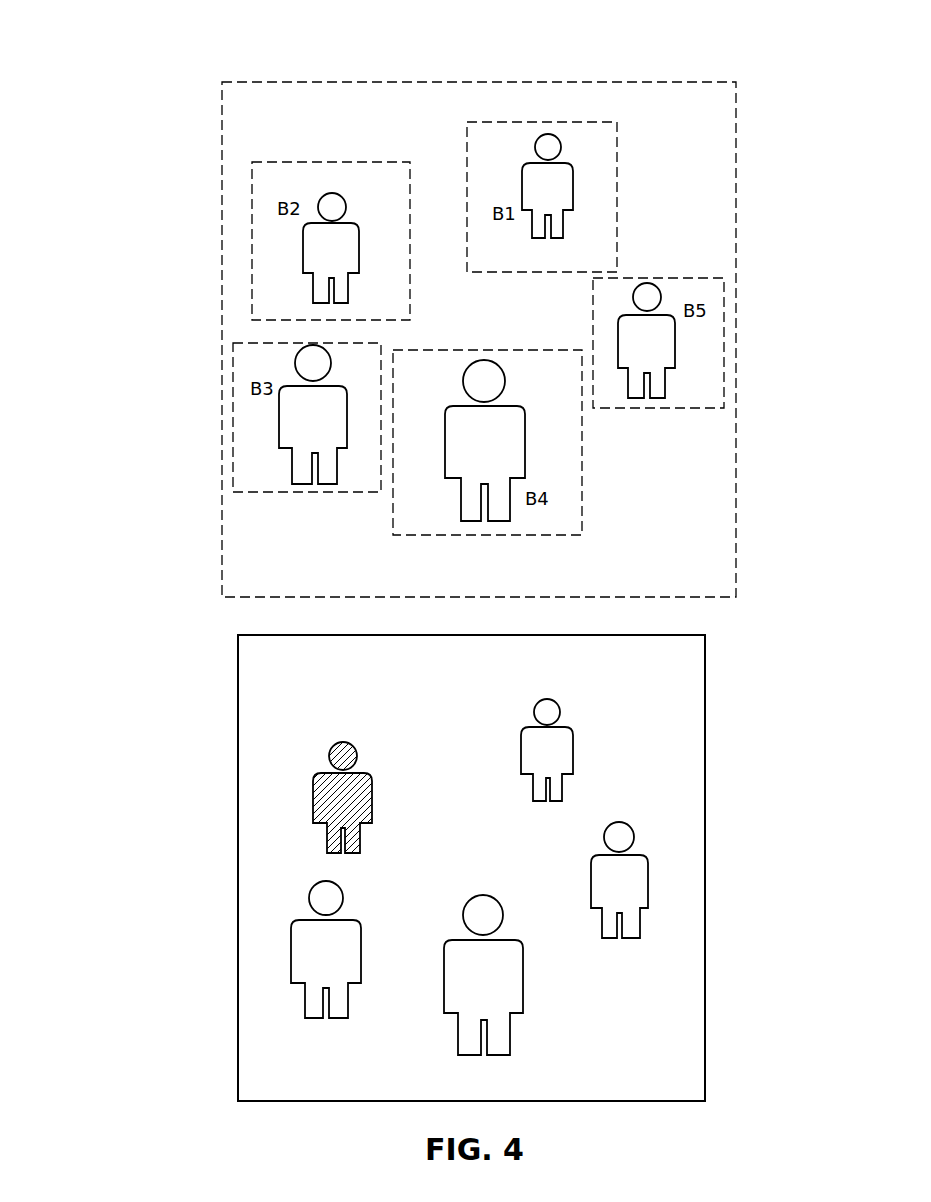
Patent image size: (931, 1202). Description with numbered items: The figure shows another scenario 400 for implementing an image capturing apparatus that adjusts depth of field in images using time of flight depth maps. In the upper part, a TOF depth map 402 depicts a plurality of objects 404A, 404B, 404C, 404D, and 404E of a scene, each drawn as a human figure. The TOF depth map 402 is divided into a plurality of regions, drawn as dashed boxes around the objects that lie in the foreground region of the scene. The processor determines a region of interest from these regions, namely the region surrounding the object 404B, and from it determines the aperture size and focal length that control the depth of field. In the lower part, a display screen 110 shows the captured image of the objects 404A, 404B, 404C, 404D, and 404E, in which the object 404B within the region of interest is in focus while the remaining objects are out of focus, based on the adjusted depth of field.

The scenario 400 is at (106, 48).
The TOF depth map 402 is at (222, 158).
The display screen 110 is at (237, 693).
The object 404A is at (573, 180).
The object 404B is at (303, 243).
The object 404C is at (279, 427).
The object 404D is at (525, 437).
The object 404E is at (675, 350).